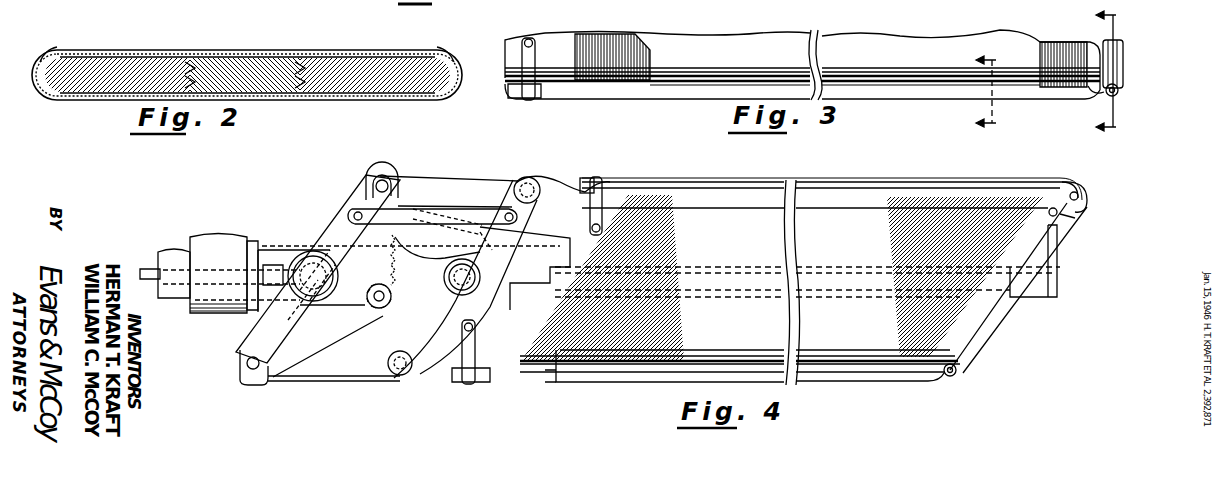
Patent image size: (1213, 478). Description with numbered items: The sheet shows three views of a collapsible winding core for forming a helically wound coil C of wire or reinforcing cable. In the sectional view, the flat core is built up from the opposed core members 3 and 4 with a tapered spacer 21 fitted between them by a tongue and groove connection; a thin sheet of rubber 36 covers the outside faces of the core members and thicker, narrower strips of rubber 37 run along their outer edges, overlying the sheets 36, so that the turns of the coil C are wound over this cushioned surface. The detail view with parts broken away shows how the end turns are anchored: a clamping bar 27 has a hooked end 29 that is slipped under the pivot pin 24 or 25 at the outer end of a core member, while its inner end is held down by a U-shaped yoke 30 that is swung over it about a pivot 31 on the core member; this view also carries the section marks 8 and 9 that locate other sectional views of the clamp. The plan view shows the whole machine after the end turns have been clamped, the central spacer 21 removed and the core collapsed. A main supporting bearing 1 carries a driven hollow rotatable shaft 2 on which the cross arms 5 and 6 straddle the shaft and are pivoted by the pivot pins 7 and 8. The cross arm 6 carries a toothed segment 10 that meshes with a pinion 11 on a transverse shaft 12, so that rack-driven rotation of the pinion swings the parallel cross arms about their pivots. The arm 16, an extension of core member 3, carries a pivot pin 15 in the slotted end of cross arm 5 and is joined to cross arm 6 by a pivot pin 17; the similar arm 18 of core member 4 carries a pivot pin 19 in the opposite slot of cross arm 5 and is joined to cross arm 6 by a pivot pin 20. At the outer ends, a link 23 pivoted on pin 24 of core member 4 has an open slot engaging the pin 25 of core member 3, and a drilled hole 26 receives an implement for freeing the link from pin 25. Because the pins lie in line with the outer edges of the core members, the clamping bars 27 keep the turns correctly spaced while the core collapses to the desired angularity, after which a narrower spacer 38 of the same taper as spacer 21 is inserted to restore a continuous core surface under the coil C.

In FIG. 4, the main supporting bearing 1 is at (226, 240).
In FIG. 4, the hollow rotatable shaft 2 is at (170, 252).
In FIG. 2, the core member 3 is at (162, 58).
In FIG. 4, the core member 3 is at (640, 182).
In FIG. 2, the core member 4 is at (365, 58).
In FIG. 4, the core member 4 is at (515, 352).
In FIG. 4, the cross arm 5 is at (332, 236).
In FIG. 4, the cross arm 6 is at (470, 262).
In FIG. 4, the pivot pin 7 is at (300, 262).
In FIG. 3, the pivot pin 8 is at (1000, 94).
In FIG. 4, the pivot pin 8 is at (435, 268).
In FIG. 3, the link / section line 9- 9 is at (1122, 73).
In FIG. 4, the link / section line 9- 9 is at (440, 209).
In FIG. 4, the toothed segment 10 is at (413, 225).
In FIG. 4, the pinion 11 is at (366, 308).
In FIG. 4, the transverse shaft 12 is at (391, 294).
In FIG. 4, the pivot pin 15 is at (383, 176).
In FIG. 4, the arm 16 is at (480, 180).
In FIG. 4, the pivot pin 17 is at (532, 182).
In FIG. 4, the arm 18 is at (350, 381).
In FIG. 4, the pivot pin 19 is at (250, 372).
In FIG. 4, the pivot pin 20 is at (398, 378).
In FIG. 2, the tapered spacer 21 is at (266, 58).
In FIG. 3, the link 23 is at (1123, 56).
In FIG. 4, the link 23 is at (1000, 318).
In FIG. 3, the pivot pin 24 is at (1118, 92).
In FIG. 4, the pivot pin 24 is at (958, 375).
In FIG. 4, the pivot pin 25 is at (1072, 190).
In FIG. 4, the drilled hole 26 is at (1040, 205).
In FIG. 3, the clamping bar 27 is at (893, 99).
In FIG. 4, the clamping bar 27 is at (935, 182).
In FIG. 3, the hooked end 29 is at (1092, 88).
In FIG. 4, the hooked end 29 is at (1084, 215).
In FIG. 3, the U-shaped yoke 30 is at (535, 73).
In FIG. 4, the U-shaped yoke 30 is at (600, 180).
In FIG. 3, the pivot 31 is at (530, 40).
In FIG. 4, the pivot 31 is at (590, 228).
In FIG. 2, the thin sheet of rubber 36 is at (135, 52).
In FIG. 2, the strip of rubber 37 is at (45, 52).
In FIG. 3, the strip of rubber 37 is at (672, 85).
In FIG. 4, the strip of rubber 37 is at (722, 200).
In FIG. 4, the spacer 38 is at (1050, 298).
In FIG. 2, the coil C is at (232, 55).
In FIG. 3, the coil C is at (640, 32).
In FIG. 4, the coil C is at (680, 326).